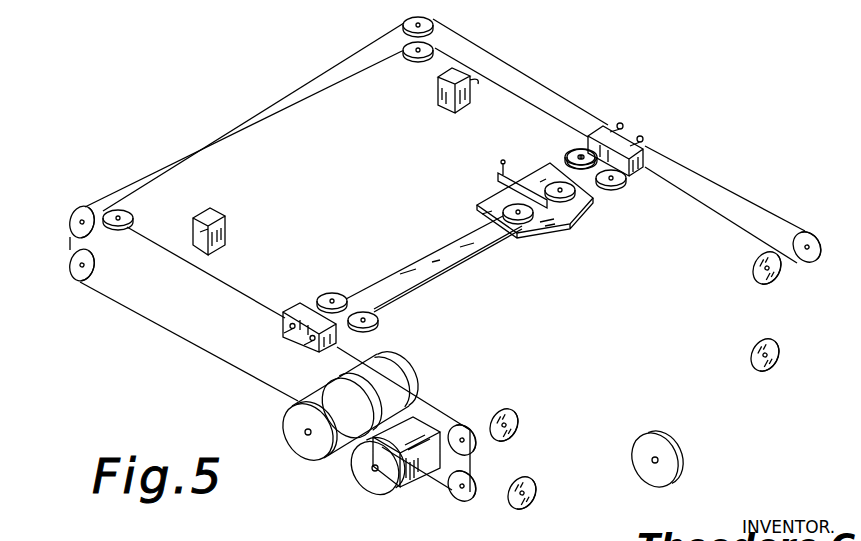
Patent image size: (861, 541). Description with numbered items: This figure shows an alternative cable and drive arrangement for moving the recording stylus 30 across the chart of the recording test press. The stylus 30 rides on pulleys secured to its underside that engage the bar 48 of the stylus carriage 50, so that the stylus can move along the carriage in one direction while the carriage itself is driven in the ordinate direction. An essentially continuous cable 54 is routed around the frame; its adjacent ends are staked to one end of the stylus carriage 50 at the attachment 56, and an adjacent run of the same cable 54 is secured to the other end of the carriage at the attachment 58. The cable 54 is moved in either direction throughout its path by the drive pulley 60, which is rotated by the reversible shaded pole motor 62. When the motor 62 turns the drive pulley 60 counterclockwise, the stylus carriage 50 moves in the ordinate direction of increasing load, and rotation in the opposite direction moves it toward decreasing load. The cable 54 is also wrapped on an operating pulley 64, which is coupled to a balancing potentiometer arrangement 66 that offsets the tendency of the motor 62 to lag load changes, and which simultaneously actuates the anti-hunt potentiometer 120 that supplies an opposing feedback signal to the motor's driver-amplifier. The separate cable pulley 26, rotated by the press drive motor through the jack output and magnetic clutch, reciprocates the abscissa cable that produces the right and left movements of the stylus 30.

The cable pulley 26 is at (680, 455).
The recording stylus 30 is at (500, 176).
The bar 48 is at (452, 269).
The stylus carriage 50 is at (586, 149).
The continuous cable 54 is at (744, 196).
The cable end attachment 56 is at (300, 345).
The cable run attachment 58 is at (641, 143).
The drive pulley 60 is at (360, 472).
The shaded pole motor 62 is at (418, 481).
The operating pulley 64 is at (287, 417).
The balancing potentiometer arrangement 66 is at (337, 384).
The anti-hunt potentiometer 120 is at (393, 368).